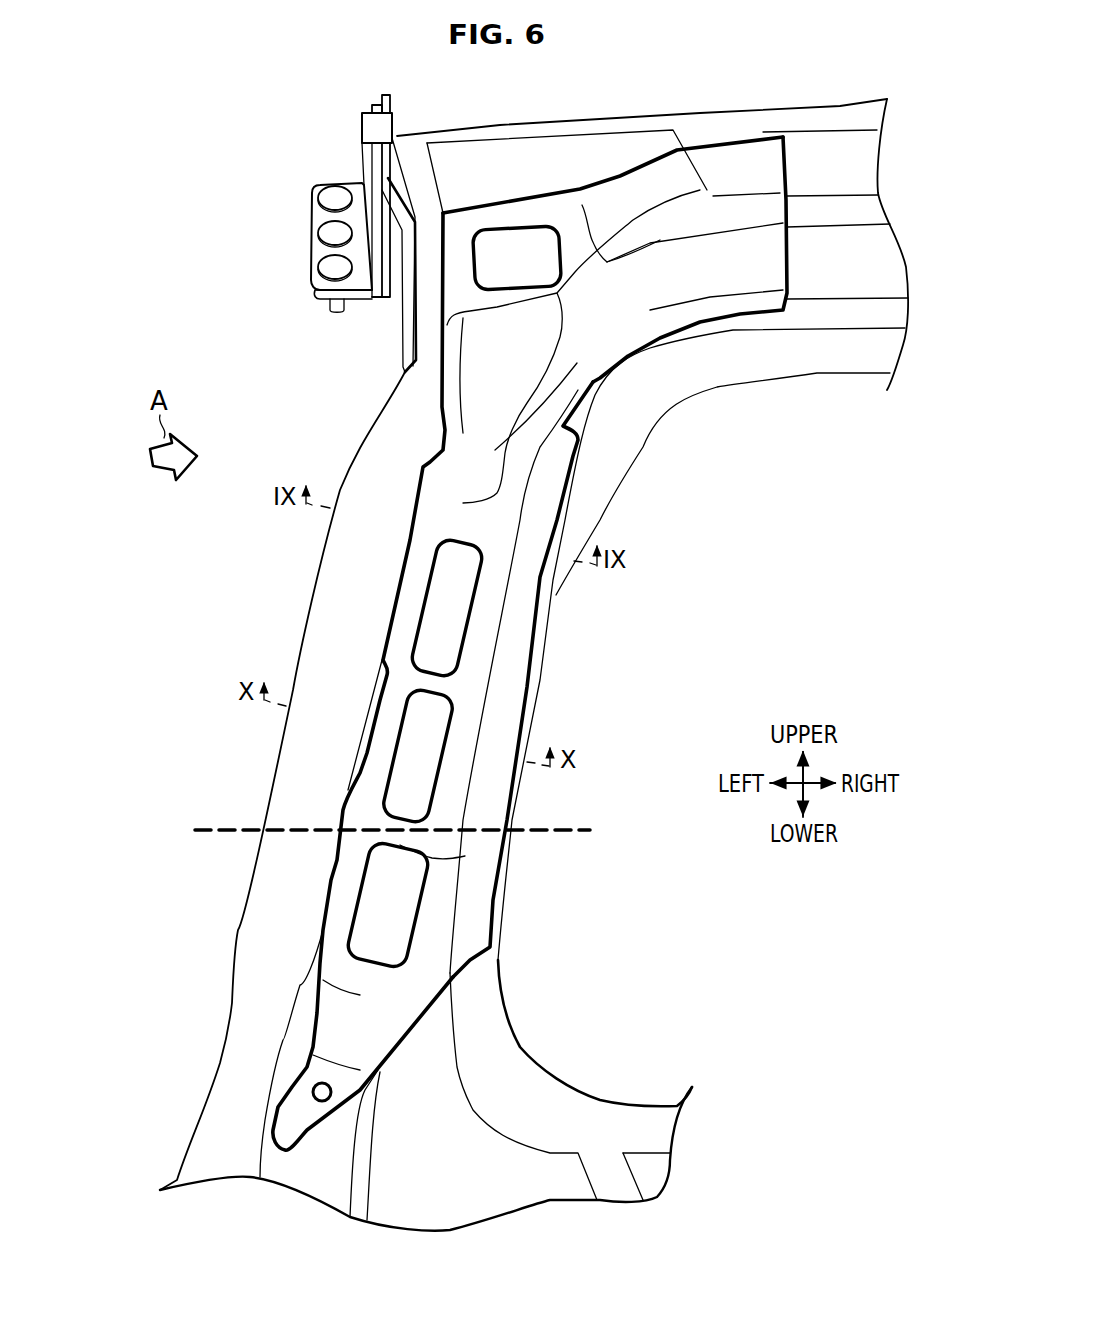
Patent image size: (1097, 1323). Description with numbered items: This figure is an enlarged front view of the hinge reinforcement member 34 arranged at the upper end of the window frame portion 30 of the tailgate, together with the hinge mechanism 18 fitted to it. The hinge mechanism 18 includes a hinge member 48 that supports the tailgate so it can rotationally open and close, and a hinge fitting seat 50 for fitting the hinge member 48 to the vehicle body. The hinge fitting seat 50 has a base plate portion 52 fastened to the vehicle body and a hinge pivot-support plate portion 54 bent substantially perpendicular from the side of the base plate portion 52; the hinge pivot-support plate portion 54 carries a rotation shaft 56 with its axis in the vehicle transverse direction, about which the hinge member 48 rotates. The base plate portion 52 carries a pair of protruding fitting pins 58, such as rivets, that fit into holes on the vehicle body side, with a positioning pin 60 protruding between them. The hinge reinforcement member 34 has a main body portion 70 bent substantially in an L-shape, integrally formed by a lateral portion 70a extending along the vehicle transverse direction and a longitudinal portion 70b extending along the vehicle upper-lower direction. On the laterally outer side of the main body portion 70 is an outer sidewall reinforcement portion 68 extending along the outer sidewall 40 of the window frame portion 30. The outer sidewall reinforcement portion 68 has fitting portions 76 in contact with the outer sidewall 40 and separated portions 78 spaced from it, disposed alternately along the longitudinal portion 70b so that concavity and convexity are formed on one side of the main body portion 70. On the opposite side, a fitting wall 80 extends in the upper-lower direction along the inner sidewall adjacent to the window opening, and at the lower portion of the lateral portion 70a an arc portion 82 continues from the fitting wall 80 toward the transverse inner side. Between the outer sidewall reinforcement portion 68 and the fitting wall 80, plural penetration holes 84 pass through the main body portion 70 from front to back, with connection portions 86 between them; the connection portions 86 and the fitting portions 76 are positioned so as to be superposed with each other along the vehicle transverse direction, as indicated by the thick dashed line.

The hinge mechanism 18 is at (308, 223).
The window frame portion 30 is at (238, 920).
The hinge reinforcement member 34 is at (558, 517).
The outer sidewall 40 is at (300, 650).
The hinge member 48 is at (403, 356).
The hinge fitting seat 50 is at (367, 299).
The base plate portion 52 is at (313, 291).
The hinge pivot-support plate portion 54 is at (367, 172).
The rotation shaft 56 is at (362, 125).
The fitting pin 58 is at (331, 196).
The positioning pin 60 is at (331, 232).
The outer sidewall reinforcement portion 68 is at (443, 626).
The main body portion 70 is at (443, 626).
The lateral portion 70a is at (605, 190).
The longitudinal portion 70b is at (518, 712).
The fitting portion 76 is at (410, 497).
The separated portion 78 is at (367, 737).
The fitting wall 80 is at (528, 679).
The arc portion 82 is at (687, 333).
The penetration hole 84 is at (527, 228).
The connection portion 86 is at (398, 838).